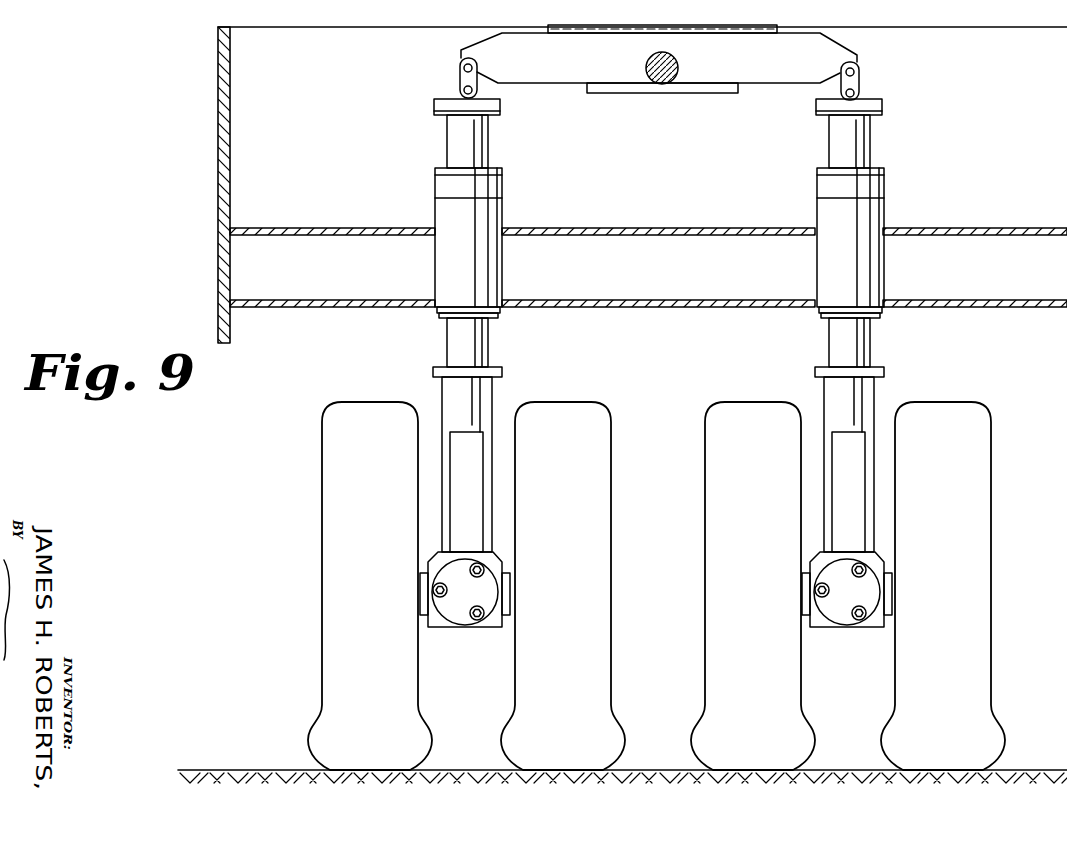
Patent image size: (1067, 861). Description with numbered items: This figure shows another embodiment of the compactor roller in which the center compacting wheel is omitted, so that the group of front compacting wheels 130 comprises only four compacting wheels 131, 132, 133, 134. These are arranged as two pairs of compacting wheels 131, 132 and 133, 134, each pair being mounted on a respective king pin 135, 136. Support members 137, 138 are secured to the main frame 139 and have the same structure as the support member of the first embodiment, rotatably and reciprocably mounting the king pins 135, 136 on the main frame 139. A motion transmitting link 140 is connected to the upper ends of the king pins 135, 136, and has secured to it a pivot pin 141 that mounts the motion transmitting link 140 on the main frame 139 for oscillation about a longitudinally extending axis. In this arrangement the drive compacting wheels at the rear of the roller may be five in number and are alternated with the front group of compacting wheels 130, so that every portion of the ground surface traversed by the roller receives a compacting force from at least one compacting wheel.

The group of front compacting wheels 130 is at (585, 553).
The compacting wheel 131 is at (362, 413).
The compacting wheel 132 is at (565, 413).
The compacting wheel 133 is at (750, 415).
The compacting wheel 134 is at (950, 412).
The king pin 135 is at (483, 340).
The king pin 136 is at (860, 347).
The support member 137 is at (495, 263).
The support member 138 is at (877, 267).
The main frame 139 is at (226, 155).
The motion transmitting link 140 is at (550, 75).
The pivot pin 141 is at (662, 70).